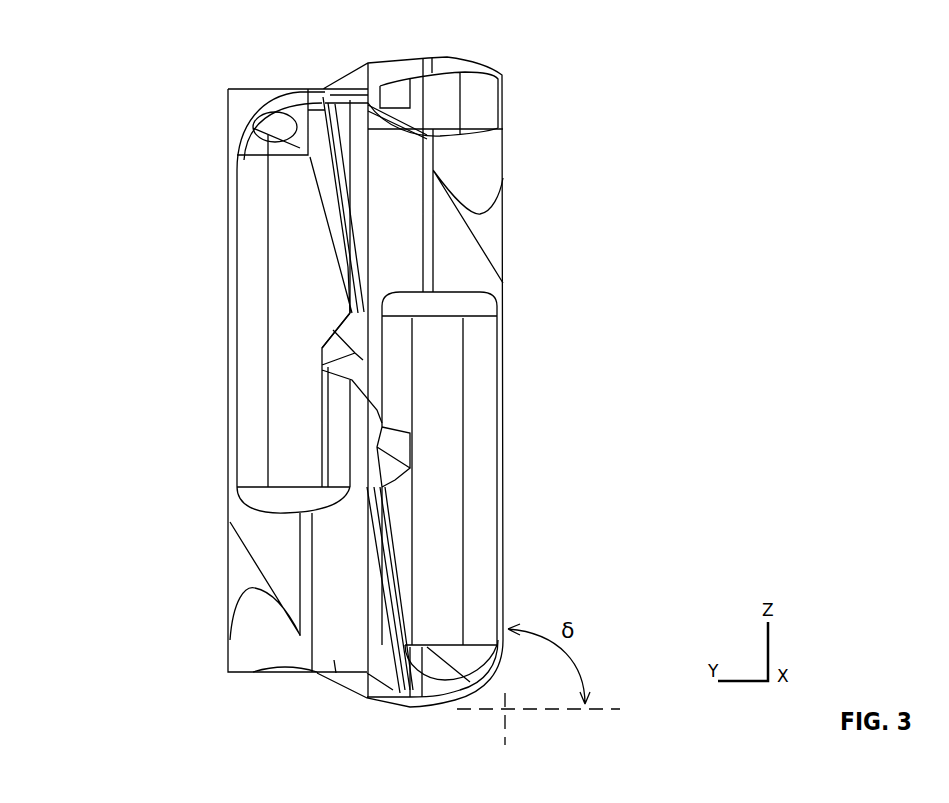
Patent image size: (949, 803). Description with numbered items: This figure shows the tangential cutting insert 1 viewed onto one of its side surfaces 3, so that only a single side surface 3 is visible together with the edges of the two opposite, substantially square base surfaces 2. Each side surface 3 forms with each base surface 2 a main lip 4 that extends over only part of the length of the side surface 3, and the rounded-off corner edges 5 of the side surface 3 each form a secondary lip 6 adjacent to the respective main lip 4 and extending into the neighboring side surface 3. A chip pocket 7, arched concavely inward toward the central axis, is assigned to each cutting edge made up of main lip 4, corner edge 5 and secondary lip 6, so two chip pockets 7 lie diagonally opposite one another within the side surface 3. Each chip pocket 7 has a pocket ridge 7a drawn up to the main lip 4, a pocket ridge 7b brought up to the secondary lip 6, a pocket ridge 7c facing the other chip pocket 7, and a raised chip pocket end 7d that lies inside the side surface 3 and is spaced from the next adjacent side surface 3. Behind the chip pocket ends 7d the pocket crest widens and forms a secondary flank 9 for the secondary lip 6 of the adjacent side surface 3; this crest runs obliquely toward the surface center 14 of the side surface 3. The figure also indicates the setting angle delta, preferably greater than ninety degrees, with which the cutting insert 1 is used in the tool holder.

The tangential cutting insert 1 is at (433, 377).
The base surface 2 is at (216, 330).
The side surface 3 is at (493, 227).
The main lip 4 is at (228, 195).
The corner edge 5 is at (258, 104).
The secondary lip 6 is at (345, 95).
The chip pocket 7 is at (305, 293).
The pocket ridge 7a is at (240, 212).
The pocket ridge 7b is at (300, 150).
The pocket ridge 7c is at (333, 372).
The chip pocket end 7d is at (291, 505).
The secondary flank 9 is at (337, 673).
The surface center 14 is at (367, 403).